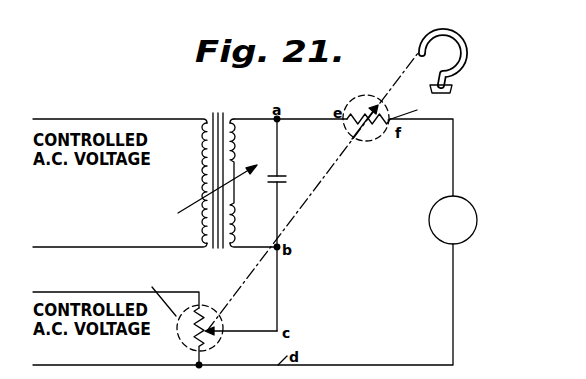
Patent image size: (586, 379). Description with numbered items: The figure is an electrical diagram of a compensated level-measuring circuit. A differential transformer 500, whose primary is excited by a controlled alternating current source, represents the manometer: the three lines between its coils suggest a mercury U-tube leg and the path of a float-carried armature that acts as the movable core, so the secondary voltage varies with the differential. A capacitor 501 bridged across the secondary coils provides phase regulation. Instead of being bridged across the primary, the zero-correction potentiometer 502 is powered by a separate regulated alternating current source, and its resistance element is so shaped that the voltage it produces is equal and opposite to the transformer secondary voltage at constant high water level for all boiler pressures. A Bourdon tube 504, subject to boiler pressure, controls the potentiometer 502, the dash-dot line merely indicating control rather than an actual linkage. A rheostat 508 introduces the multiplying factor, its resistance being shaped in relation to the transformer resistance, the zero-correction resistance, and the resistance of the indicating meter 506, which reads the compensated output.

The differential transformer 500 is at (242, 115).
The capacitor 501 is at (292, 168).
The potentiometer 502 is at (176, 340).
The Bourdon tube 504 is at (466, 46).
The indicating meter 506 is at (476, 212).
The rheostat 508 is at (378, 146).